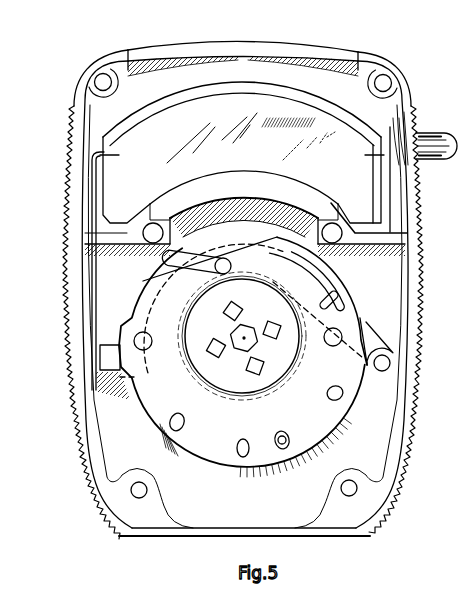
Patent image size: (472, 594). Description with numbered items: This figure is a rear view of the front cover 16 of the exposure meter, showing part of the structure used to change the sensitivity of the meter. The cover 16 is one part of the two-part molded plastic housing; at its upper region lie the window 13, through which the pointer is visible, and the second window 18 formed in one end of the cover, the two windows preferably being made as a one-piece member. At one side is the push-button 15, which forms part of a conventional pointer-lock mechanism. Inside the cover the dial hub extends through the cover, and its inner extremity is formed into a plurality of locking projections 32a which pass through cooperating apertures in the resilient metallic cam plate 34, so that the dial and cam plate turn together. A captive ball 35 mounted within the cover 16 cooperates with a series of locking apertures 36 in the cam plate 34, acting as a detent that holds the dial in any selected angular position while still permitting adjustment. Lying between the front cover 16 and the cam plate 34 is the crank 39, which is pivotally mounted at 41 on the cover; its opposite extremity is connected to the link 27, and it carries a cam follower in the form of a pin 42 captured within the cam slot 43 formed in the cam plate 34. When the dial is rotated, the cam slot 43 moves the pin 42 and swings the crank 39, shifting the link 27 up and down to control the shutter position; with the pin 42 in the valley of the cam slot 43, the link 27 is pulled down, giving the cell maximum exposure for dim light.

The window 13 is at (152, 151).
The push-button 15 is at (425, 133).
The cover 16 is at (410, 422).
The second window 18 is at (328, 53).
The link 27 is at (90, 307).
The locking projections 32a is at (266, 336).
The cam plate 34 is at (348, 419).
The captive ball 35 is at (283, 449).
The locking apertures 36 is at (187, 420).
The crank 39 is at (368, 330).
The pivot 41 is at (391, 361).
The pin 42 is at (165, 270).
The cam slot 43 is at (338, 287).